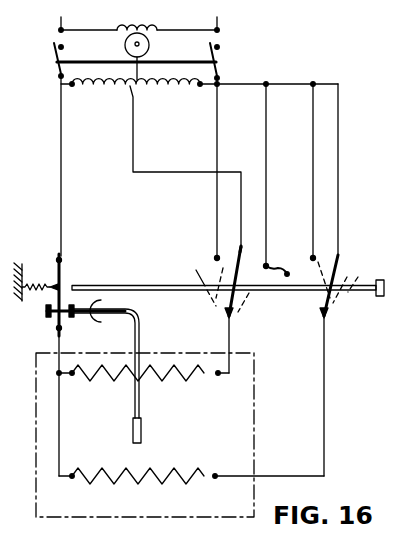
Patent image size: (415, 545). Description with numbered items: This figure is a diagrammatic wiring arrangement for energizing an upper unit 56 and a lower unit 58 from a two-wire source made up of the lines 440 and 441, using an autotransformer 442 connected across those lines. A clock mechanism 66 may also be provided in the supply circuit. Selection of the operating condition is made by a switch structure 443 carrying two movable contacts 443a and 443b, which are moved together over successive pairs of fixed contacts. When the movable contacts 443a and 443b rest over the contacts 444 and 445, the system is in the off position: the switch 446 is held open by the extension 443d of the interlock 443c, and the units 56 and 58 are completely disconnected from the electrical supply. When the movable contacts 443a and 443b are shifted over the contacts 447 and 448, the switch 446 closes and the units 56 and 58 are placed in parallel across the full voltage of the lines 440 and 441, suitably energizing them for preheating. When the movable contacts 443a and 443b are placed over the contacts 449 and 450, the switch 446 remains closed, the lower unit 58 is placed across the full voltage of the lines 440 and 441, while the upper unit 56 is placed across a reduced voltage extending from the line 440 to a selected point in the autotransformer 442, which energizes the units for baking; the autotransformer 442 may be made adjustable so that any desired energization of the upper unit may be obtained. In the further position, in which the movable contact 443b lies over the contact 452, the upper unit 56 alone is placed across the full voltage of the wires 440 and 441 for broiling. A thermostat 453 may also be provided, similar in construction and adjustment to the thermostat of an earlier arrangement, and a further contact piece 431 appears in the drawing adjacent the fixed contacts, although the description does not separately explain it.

The two-wire source line 440 is at (61, 24).
The two-wire source line 441 is at (217, 22).
The clock mechanism 66 is at (150, 45).
The autotransformer 442 is at (125, 86).
The switch 446 is at (60, 278).
The switch structure 443 is at (298, 318).
The extension 443d is at (141, 285).
The movable contact 443a is at (228, 309).
The movable contact 443b is at (322, 300).
The interlock 443c is at (356, 292).
The contact 444 is at (196, 270).
The contact 447 is at (217, 256).
The contact 449 is at (242, 247).
The contact 448 is at (313, 256).
The contact 445 is at (266, 264).
The contact piece 431 is at (279, 276).
The contact 450 is at (337, 256).
The contact 452 is at (360, 276).
The thermostat 453 is at (79, 320).
The upper unit 56 is at (182, 386).
The lower unit 58 is at (155, 474).